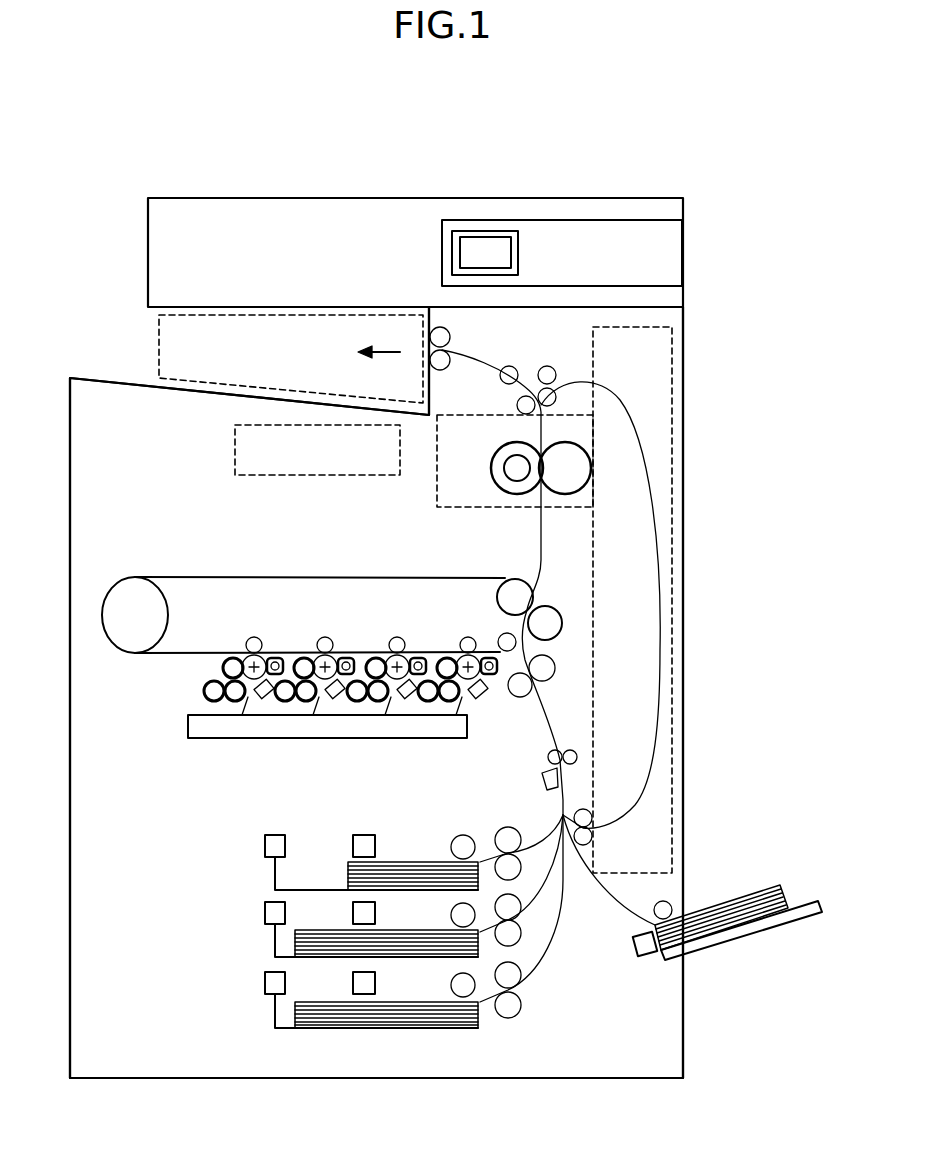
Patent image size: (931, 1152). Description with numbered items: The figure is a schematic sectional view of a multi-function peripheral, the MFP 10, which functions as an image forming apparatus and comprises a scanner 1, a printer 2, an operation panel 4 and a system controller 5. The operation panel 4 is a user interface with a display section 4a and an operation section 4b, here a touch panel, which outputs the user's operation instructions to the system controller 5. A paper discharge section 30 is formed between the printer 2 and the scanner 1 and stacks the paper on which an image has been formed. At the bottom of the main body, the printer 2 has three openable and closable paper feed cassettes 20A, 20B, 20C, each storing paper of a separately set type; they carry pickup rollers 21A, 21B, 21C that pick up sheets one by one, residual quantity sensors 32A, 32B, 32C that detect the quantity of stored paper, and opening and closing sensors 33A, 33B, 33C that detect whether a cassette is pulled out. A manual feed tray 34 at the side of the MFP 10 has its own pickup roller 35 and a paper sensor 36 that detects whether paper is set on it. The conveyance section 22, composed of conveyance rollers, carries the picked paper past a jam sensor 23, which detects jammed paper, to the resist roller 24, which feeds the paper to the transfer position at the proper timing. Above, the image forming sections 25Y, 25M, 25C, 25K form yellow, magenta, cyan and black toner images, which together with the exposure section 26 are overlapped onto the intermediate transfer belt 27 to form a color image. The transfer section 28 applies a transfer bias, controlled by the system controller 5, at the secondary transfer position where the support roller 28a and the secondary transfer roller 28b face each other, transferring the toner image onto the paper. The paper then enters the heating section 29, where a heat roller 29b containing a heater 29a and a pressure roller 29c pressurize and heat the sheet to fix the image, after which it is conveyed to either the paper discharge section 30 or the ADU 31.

The MFP 10 is at (465, 160).
The scanner 1 is at (148, 258).
The printer 2 is at (77, 380).
The operation panel 4 is at (557, 253).
The display section 4a is at (452, 270).
The operation section 4b is at (452, 240).
The system controller 5 is at (235, 452).
The paper discharge section 30 is at (159, 350).
The ADU 31 is at (672, 402).
The heating section 29 is at (515, 461).
The heater 29a is at (515, 455).
The heat roller 29b is at (517, 494).
The pressure roller 29c is at (565, 494).
The intermediate transfer belt 27 is at (360, 577).
The transfer section 28 is at (545, 603).
The support roller 28a is at (515, 580).
The secondary transfer roller 28b is at (555, 640).
The exposure section 26 is at (232, 738).
The image forming section 25Y is at (265, 636).
The image forming section 25M is at (336, 636).
The image forming section 25C is at (408, 636).
The image forming section 25K is at (474, 636).
The resist roller 24 is at (522, 700).
The jam sensor 23 is at (548, 775).
The conveyance section 22 is at (486, 755).
The paper feed cassette 20A is at (358, 858).
The paper feed cassette 20B is at (358, 925).
The paper feed cassette 20C is at (358, 995).
The pickup roller 21A is at (451, 847).
The pickup roller 21B is at (451, 915).
The pickup roller 21C is at (451, 985).
The residual quantity sensor 32A is at (353, 846).
The residual quantity sensor 32B is at (353, 914).
The residual quantity sensor 32C is at (353, 984).
The opening and closing sensor 33A is at (265, 846).
The opening and closing sensor 33B is at (265, 914).
The opening and closing sensor 33C is at (265, 984).
The manual feed tray 34 is at (798, 900).
The pickup roller 35 is at (654, 908).
The paper sensor 36 is at (632, 943).